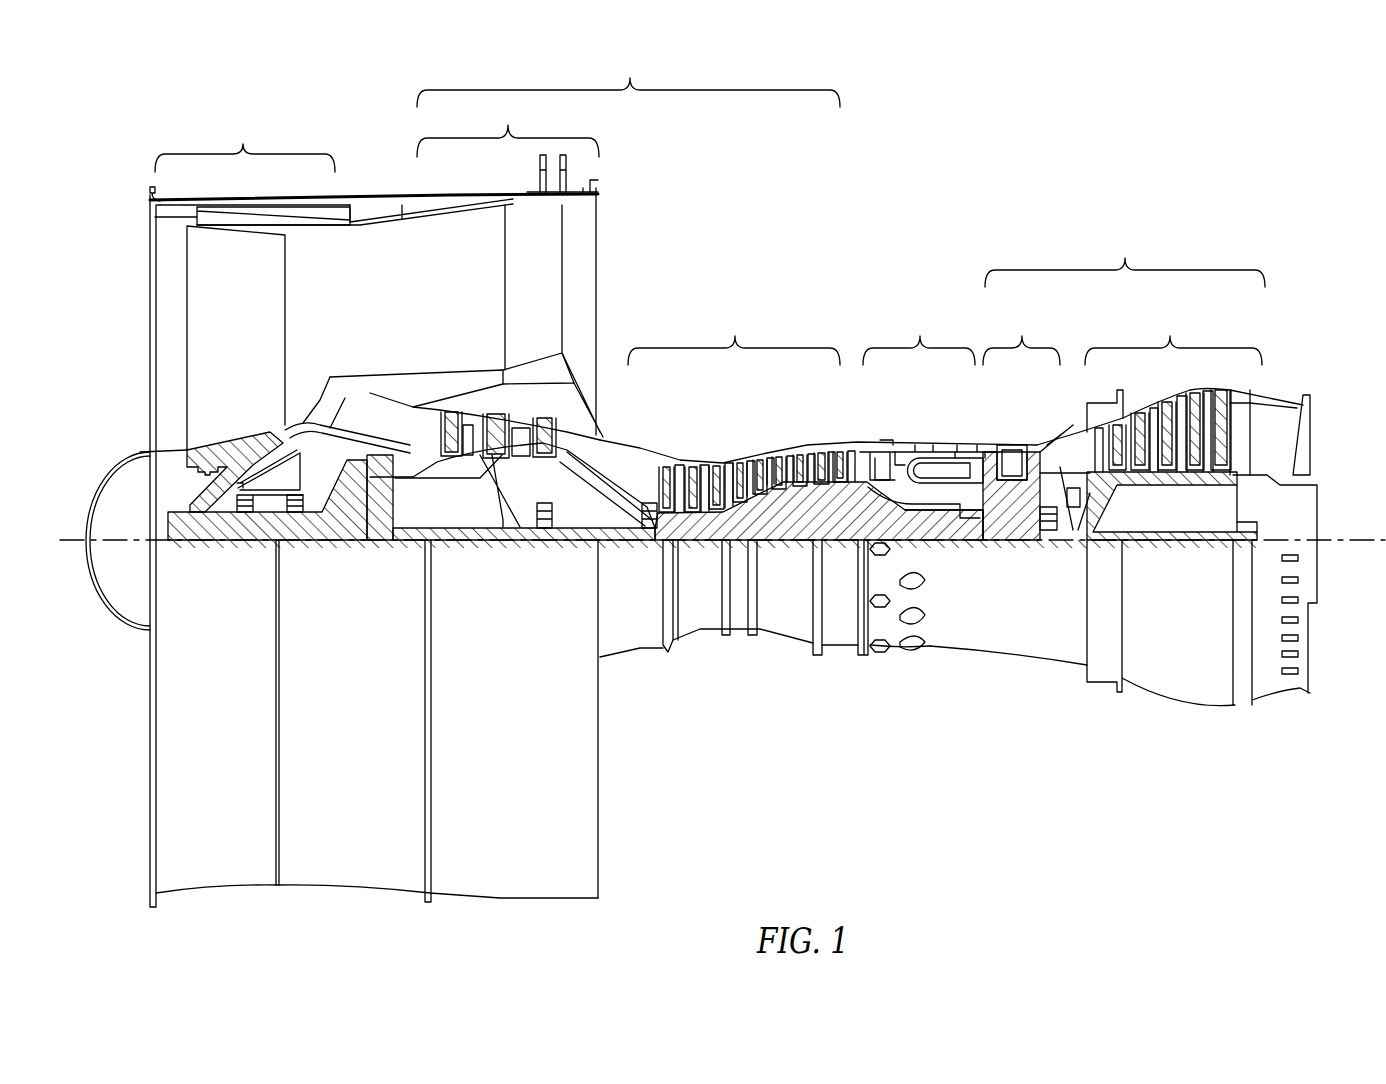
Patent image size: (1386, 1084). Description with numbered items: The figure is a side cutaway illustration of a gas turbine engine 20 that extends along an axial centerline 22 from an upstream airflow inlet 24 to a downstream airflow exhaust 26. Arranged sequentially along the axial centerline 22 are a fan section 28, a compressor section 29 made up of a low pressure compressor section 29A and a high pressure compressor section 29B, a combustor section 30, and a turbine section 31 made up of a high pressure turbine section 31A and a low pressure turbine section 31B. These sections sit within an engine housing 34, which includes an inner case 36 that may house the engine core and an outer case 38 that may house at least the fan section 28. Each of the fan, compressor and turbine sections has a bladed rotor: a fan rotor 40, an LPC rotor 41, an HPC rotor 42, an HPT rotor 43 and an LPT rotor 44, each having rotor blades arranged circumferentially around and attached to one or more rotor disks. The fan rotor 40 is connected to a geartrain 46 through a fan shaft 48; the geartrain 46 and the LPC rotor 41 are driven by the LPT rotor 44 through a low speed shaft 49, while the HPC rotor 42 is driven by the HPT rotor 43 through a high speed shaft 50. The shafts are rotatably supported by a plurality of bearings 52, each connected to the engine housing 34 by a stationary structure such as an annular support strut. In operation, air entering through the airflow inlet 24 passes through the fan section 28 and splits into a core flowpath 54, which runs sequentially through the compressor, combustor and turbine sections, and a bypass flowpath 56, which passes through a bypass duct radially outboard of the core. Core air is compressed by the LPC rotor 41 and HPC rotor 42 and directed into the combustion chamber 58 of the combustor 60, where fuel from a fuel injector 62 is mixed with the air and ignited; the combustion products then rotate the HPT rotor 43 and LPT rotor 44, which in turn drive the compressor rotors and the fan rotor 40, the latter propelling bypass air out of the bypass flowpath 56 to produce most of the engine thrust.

The gas turbine engine 20 is at (97, 198).
The axial centerline 22 is at (1365, 590).
The upstream airflow inlet 24 is at (150, 283).
The downstream airflow exhaust 26 is at (1312, 435).
The fan section 28 is at (245, 144).
The compressor section 29 is at (628, 77).
The low pressure compressor section 29A is at (492, 313).
The high pressure compressor section 29B is at (818, 409).
The combustor section 30 is at (943, 413).
The turbine section 31 is at (1125, 256).
The high pressure turbine section 31A is at (1036, 424).
The low pressure turbine section 31B is at (1177, 500).
The engine housing 34 is at (628, 675).
The inner case 36 is at (840, 645).
The outer case 38 is at (551, 898).
The fan rotor 40 is at (192, 452).
The LPC rotor 41 is at (490, 520).
The HPC rotor 42 is at (780, 500).
The HPT rotor 43 is at (1010, 545).
The LPT rotor 44 is at (1197, 535).
The geartrain 46 is at (372, 545).
The fan shaft 48 is at (222, 545).
The low speed shaft 49 is at (1168, 482).
The high speed shaft 50 is at (947, 535).
The bearings 52 is at (280, 540).
The core flowpath 54 is at (618, 462).
The bypass flowpath 56 is at (437, 317).
The combustion chamber 58 is at (930, 470).
The combustor 60 is at (962, 450).
The fuel injector 62 is at (897, 450).